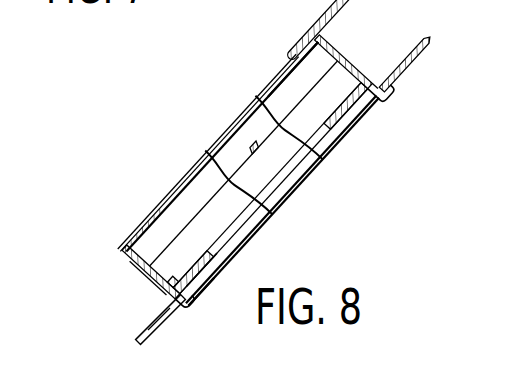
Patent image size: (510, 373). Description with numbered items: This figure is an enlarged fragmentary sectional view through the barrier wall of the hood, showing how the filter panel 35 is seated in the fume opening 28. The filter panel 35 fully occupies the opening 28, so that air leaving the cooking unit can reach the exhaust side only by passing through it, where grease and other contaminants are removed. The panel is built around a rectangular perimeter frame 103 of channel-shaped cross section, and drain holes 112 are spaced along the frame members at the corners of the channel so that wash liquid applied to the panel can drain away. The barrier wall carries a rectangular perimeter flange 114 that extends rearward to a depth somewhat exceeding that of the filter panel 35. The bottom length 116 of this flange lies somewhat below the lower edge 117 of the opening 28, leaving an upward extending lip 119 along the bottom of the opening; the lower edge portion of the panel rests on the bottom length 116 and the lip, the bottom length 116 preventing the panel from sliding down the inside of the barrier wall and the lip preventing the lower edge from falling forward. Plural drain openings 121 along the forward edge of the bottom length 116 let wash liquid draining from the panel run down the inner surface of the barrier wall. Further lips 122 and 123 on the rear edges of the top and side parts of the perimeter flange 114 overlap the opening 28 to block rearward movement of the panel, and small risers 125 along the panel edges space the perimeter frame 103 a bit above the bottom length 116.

The opening 28 is at (372, 99).
The filter panel 35 is at (233, 116).
The perimeter frame 103 is at (128, 238).
The drain holes 112 is at (176, 283).
The perimeter flange 114 is at (352, 53).
The bottom length 116 is at (157, 281).
The lower edge 117 is at (207, 268).
The lip 119 is at (202, 284).
The drain openings 121 is at (168, 316).
The lip 122 is at (305, 43).
The lip 123 is at (280, 80).
The risers 125 is at (143, 275).